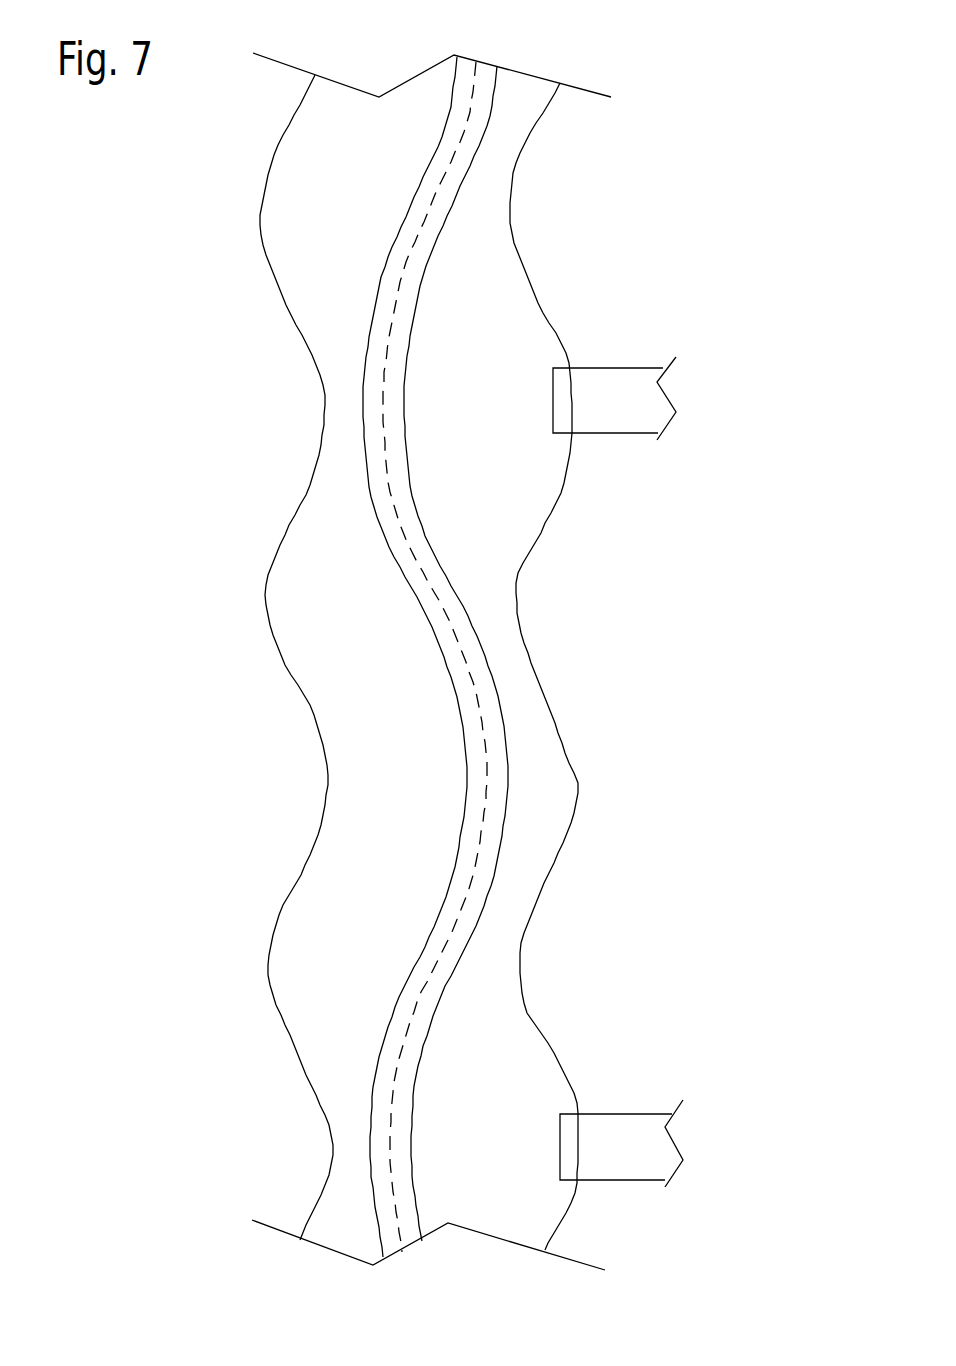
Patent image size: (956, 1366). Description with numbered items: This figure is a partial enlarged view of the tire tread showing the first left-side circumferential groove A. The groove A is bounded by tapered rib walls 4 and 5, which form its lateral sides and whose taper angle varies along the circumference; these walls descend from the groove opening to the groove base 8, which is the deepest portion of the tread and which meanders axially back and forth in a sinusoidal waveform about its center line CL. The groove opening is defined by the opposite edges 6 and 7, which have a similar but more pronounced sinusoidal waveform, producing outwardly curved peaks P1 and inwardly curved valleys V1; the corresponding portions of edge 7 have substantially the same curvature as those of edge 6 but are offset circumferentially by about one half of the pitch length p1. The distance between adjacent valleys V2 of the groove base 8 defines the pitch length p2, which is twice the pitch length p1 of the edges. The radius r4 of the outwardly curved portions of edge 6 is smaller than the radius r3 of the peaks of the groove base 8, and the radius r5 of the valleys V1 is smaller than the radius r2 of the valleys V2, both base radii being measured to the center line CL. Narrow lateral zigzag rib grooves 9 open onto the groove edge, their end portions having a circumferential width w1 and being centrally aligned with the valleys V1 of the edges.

The tapered rib wall 4 is at (362, 186).
The tapered rib wall 5 is at (495, 1144).
The groove edge 6 is at (312, 1085).
The groove edge 7 is at (560, 1050).
The groove base 8 is at (493, 676).
The lateral zigzag rib groove 9 is at (645, 415).
The circumferentially continuous wide groove A is at (552, 58).
The center line of the groove base CL is at (484, 695).
The circumferential width w1 is at (620, 470).
The pitch length p1 is at (263, 587).
The pitch length p2 is at (678, 399).
The peak P1 is at (322, 764).
The valley V1 is at (273, 587).
The valley V2 is at (397, 388).
The radius of curvature r2 is at (389, 401).
The radius of curvature r3 is at (476, 775).
The radius of curvature r4 is at (319, 402).
The radius of curvature r5 is at (254, 208).